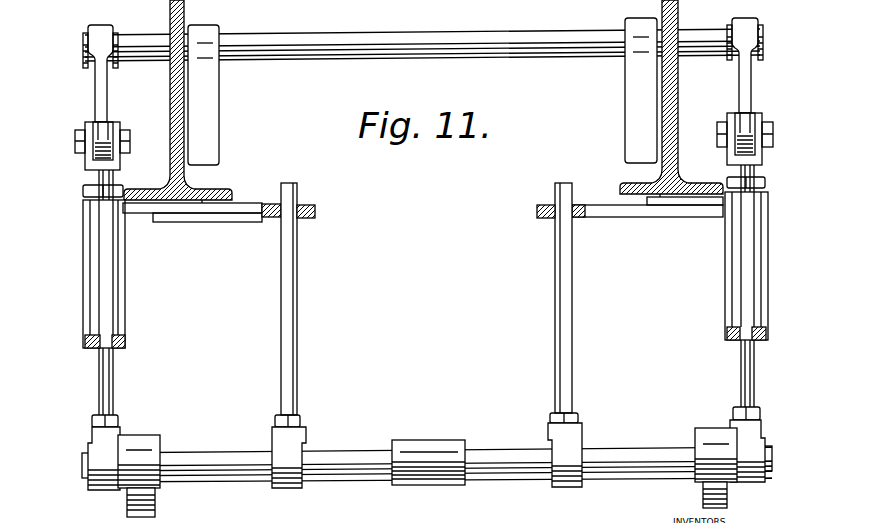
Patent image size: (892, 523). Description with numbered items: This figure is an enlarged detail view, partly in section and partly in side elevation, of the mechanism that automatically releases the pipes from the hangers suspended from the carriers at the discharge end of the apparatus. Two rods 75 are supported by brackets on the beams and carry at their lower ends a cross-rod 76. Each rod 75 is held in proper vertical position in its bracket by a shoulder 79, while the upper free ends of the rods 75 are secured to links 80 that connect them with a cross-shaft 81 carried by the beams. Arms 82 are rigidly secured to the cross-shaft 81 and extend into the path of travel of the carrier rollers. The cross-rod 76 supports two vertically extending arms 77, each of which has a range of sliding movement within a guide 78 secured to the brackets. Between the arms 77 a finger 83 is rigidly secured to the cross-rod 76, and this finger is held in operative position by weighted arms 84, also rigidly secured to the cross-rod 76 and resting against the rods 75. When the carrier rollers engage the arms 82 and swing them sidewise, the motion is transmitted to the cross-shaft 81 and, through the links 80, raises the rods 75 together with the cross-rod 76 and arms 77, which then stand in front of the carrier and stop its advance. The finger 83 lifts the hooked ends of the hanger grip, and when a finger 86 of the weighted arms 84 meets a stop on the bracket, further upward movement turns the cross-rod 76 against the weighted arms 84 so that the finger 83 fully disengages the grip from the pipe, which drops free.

The rod 75 is at (113, 375).
The cross-rod 76 is at (343, 472).
The vertically extending arm 77 is at (294, 330).
The guide 78 is at (220, 213).
The shoulder 79 is at (100, 342).
The link 80 is at (98, 98).
The cross-shaft 81 is at (437, 45).
The arm 82 is at (213, 123).
The finger 83 is at (425, 444).
The weighted arm 84 is at (150, 500).
The finger 86 is at (143, 441).